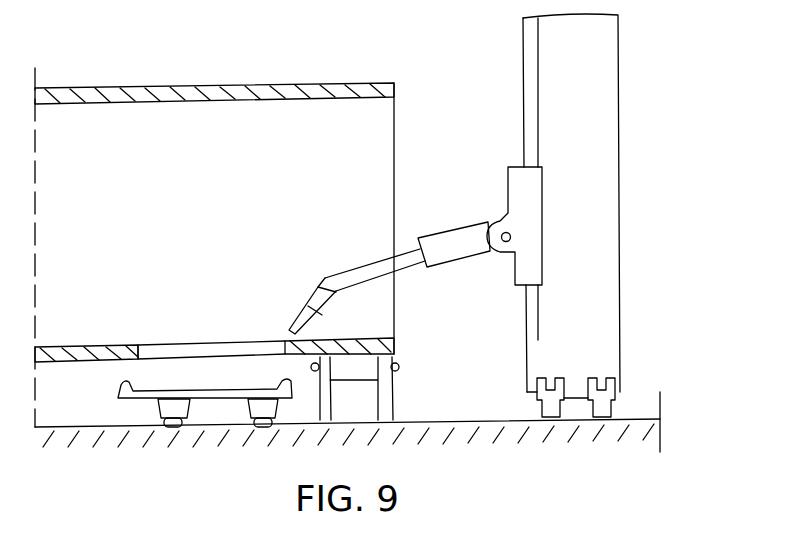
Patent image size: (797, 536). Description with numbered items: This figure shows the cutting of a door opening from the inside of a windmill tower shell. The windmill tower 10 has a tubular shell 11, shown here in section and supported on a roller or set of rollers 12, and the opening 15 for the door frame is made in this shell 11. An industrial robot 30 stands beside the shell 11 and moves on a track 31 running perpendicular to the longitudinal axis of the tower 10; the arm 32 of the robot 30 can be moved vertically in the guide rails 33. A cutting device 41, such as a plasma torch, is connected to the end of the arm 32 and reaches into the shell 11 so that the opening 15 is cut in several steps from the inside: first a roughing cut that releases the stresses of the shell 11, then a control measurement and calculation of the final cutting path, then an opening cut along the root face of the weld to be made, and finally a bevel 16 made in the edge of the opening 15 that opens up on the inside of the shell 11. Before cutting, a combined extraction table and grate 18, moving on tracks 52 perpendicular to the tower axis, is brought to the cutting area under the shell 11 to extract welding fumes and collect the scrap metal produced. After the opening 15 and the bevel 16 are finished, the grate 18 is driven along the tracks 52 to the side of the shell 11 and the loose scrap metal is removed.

The windmill tower 10 is at (214, 214).
The shell 11 is at (160, 84).
The roller or set of rollers 12 is at (358, 368).
The opening 15 is at (200, 283).
The bevel on the inside 16 is at (138, 345).
The combined extraction table and grate 18 is at (174, 434).
The industrial robot 30 is at (582, 215).
The track 31 is at (540, 418).
The arm 32 is at (443, 236).
The guide rail 33 is at (523, 113).
The cutting device 41 is at (298, 310).
The path 52 is at (165, 430).